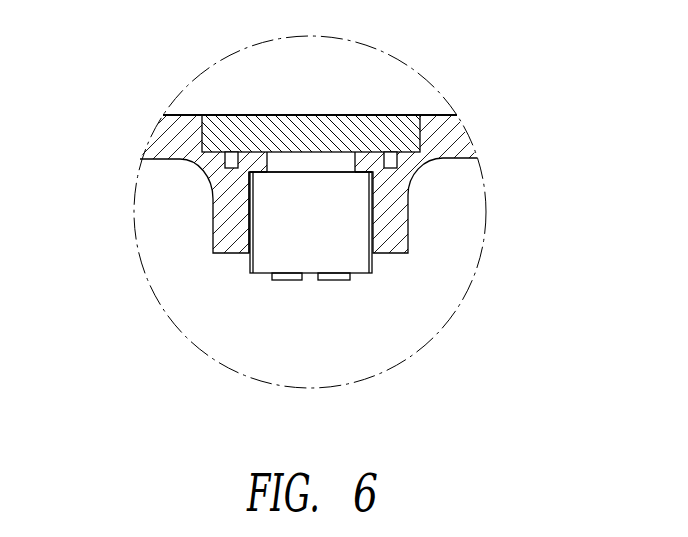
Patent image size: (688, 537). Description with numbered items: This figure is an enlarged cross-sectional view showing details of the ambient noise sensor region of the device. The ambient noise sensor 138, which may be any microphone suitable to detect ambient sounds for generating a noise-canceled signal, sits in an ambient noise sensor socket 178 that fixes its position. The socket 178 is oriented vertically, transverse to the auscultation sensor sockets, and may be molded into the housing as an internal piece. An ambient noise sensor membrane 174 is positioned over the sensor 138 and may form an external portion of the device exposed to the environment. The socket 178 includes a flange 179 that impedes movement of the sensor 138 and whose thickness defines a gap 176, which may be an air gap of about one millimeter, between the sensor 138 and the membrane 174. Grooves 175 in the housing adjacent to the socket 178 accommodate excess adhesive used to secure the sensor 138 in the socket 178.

The ambient noise sensor membrane 174 is at (360, 115).
The grooves 175 is at (391, 165).
The gap 176 is at (280, 157).
The ambient noise sensor socket 178 is at (236, 224).
The flange 179 is at (360, 173).
The ambient noise sensor 138 is at (353, 253).